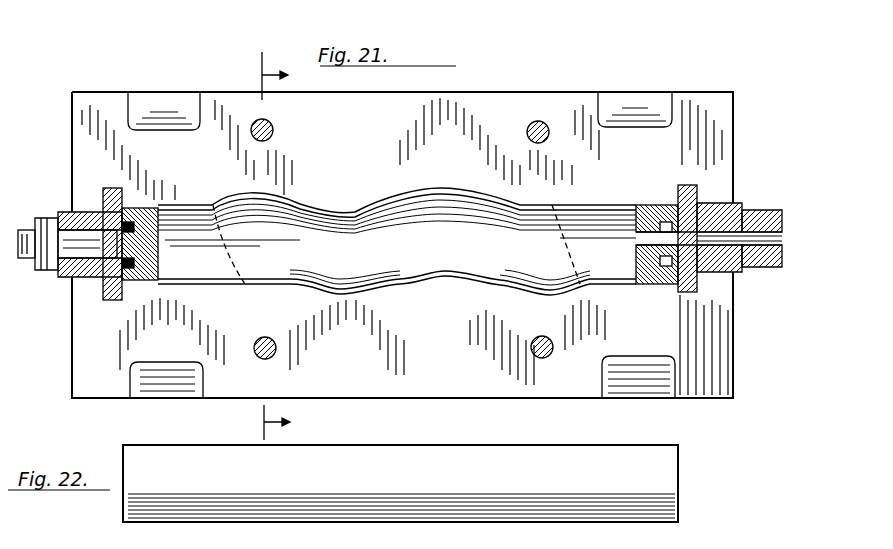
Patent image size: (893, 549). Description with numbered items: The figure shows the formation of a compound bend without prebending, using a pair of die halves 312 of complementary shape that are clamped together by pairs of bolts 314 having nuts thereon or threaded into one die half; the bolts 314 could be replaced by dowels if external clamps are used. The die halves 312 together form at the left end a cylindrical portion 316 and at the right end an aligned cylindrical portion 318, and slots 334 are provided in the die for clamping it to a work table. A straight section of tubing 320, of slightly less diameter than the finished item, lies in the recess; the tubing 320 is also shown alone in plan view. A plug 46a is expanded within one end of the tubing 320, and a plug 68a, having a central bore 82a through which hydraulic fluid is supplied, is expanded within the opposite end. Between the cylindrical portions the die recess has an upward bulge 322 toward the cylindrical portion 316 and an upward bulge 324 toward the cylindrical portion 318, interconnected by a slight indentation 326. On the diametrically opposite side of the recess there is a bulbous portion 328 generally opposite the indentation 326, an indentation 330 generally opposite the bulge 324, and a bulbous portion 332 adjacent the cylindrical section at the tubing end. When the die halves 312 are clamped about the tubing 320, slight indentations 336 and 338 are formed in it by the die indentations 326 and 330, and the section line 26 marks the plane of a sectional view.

In FIG. 21, the section line 26 is at (256, 246).
In FIG. 21, the plug 46a is at (98, 272).
In FIG. 21, the plug 68a is at (732, 202).
In FIG. 21, the central bore 82a is at (618, 228).
In FIG. 21, the die halves 312 is at (518, 100).
In FIG. 21, the bolts 314 is at (271, 124).
In FIG. 21, the cylindrical portion 316 is at (180, 206).
In FIG. 21, the cylindrical portion 318 is at (586, 204).
In FIG. 21, the tubing 320 is at (610, 270).
In FIG. 22, the tubing 320 is at (407, 450).
In FIG. 21, the upward bulge 322 is at (240, 196).
In FIG. 21, the upward bulge 324 is at (437, 188).
In FIG. 21, the indentation 326 is at (360, 205).
In FIG. 21, the bulbous portion 328 is at (354, 296).
In FIG. 21, the indentation 330 is at (448, 284).
In FIG. 21, the bulbous portion 332 is at (546, 296).
In FIG. 21, the slots 334 is at (146, 110).
In FIG. 21, the indentation 336 is at (352, 226).
In FIG. 21, the indentation 338 is at (458, 280).